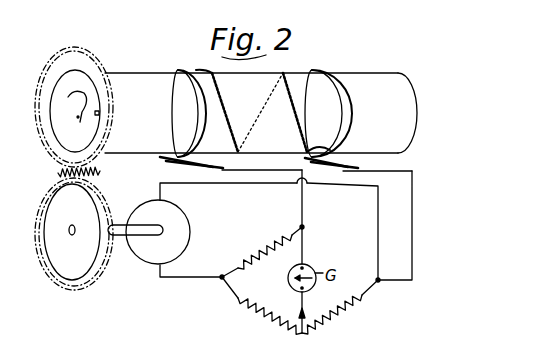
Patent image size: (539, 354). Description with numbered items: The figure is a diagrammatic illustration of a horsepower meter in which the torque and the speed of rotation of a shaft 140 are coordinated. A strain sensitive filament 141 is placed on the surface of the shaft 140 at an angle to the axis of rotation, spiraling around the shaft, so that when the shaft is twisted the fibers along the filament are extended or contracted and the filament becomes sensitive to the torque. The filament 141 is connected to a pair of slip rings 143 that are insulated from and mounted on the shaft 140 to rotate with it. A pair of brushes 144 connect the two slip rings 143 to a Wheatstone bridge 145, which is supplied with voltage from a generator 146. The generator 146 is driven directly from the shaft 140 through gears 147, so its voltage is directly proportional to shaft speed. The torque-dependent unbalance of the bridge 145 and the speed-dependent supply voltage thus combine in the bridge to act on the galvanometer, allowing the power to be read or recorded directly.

The shaft 140 is at (381, 81).
The strain sensitive filament 141 is at (233, 113).
The slip rings 143 is at (184, 69).
The brushes 144 is at (182, 170).
The Wheatstone bridge 145 is at (258, 318).
The generator 146 is at (190, 236).
The gears 147 is at (57, 173).